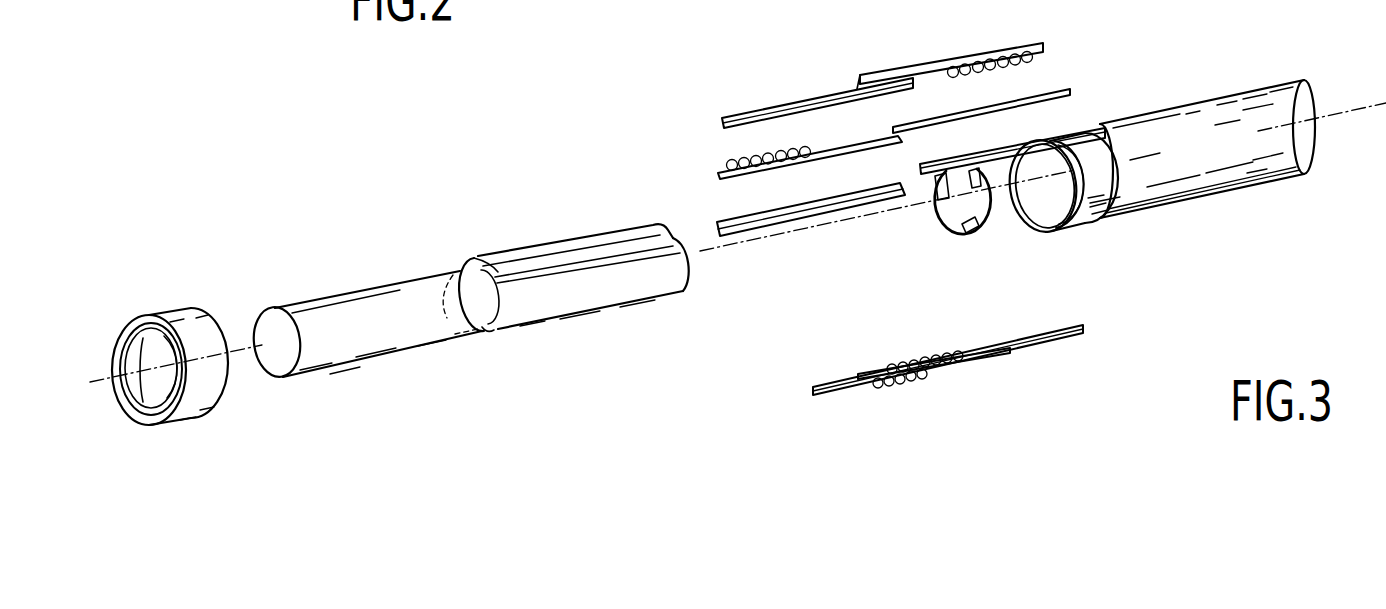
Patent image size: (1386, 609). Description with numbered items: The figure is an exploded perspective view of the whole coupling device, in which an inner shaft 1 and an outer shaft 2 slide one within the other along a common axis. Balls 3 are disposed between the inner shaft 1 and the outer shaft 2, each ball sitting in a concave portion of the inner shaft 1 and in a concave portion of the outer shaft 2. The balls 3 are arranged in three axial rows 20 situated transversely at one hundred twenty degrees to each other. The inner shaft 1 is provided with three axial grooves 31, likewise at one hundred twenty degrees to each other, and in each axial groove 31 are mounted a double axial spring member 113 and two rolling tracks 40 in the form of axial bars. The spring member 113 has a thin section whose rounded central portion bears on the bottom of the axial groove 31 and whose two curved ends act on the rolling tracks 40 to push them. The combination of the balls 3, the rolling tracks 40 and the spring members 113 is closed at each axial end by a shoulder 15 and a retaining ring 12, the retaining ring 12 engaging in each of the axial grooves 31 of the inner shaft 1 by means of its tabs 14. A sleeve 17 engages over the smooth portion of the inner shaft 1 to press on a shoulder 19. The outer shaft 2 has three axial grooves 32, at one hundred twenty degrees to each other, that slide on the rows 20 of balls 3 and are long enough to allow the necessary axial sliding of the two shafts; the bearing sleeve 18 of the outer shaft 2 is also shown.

The inner shaft 1 is at (338, 308).
The outer shaft 2 is at (1213, 107).
The balls 3 is at (753, 163).
The retaining ring 12 is at (952, 231).
The tab 14 is at (968, 228).
The shoulder 15 is at (490, 267).
The sleeve 17 is at (197, 398).
The bearing sleeve 18 is at (1088, 223).
The shoulder 19 is at (503, 327).
The axial rows 20 is at (716, 165).
The axial grooves 31 is at (607, 260).
The axial grooves 32 is at (1063, 231).
The rolling tracks 40 is at (760, 112).
The double axial spring member 113 is at (845, 148).